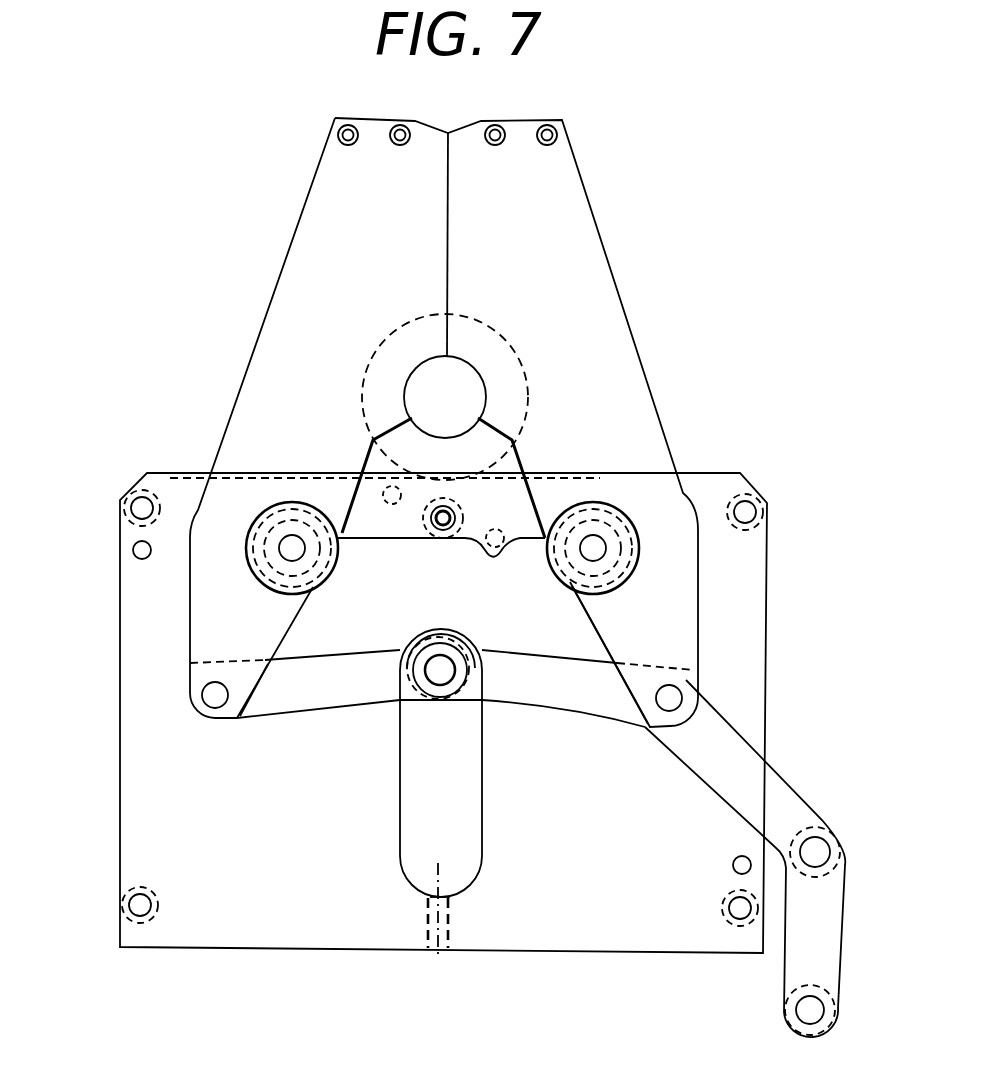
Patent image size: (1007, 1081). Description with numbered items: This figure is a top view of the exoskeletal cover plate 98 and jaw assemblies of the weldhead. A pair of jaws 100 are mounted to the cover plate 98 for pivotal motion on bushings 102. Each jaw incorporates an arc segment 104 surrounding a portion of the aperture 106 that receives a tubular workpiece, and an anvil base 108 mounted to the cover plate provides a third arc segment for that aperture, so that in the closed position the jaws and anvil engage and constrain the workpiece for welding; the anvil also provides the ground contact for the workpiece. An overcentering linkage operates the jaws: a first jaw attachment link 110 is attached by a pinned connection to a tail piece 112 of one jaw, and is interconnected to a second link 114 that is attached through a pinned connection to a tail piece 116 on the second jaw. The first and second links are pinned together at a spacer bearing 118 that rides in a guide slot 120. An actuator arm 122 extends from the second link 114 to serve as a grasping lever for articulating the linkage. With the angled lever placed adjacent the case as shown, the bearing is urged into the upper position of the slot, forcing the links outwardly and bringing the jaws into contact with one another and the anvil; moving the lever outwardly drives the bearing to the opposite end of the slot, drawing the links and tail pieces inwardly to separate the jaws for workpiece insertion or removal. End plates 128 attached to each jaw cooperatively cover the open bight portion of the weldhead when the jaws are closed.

The base plate 98 is at (767, 607).
The jaws 100 is at (587, 190).
The bushings 102 is at (620, 515).
The arc segment 104 is at (463, 360).
The aperture 106 is at (452, 397).
The anvil base 108 is at (505, 493).
The first jaw attachment link 110 is at (315, 692).
The tail piece 112 is at (215, 598).
The second link 114 is at (547, 690).
The tail piece 116 is at (662, 602).
The spacer bearing 118 is at (430, 707).
The guide slot 120 is at (400, 808).
The actuator arm 122 is at (783, 768).
The end plates 128 is at (377, 118).